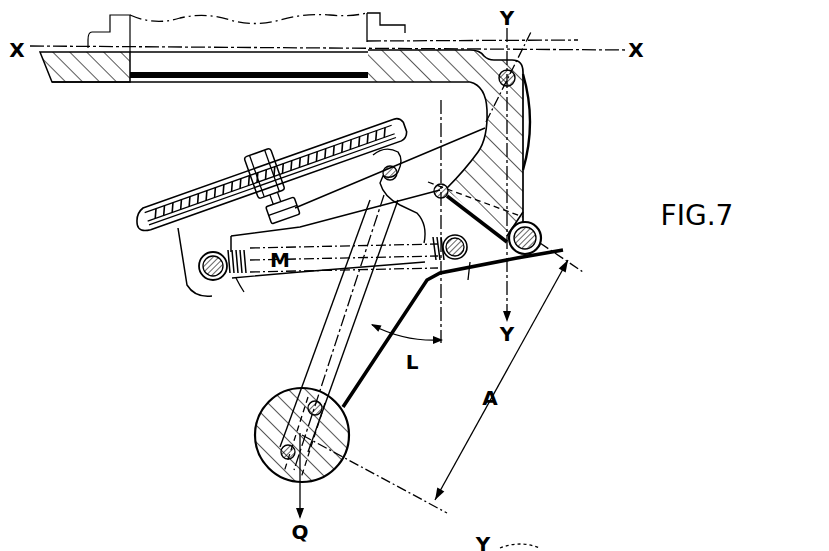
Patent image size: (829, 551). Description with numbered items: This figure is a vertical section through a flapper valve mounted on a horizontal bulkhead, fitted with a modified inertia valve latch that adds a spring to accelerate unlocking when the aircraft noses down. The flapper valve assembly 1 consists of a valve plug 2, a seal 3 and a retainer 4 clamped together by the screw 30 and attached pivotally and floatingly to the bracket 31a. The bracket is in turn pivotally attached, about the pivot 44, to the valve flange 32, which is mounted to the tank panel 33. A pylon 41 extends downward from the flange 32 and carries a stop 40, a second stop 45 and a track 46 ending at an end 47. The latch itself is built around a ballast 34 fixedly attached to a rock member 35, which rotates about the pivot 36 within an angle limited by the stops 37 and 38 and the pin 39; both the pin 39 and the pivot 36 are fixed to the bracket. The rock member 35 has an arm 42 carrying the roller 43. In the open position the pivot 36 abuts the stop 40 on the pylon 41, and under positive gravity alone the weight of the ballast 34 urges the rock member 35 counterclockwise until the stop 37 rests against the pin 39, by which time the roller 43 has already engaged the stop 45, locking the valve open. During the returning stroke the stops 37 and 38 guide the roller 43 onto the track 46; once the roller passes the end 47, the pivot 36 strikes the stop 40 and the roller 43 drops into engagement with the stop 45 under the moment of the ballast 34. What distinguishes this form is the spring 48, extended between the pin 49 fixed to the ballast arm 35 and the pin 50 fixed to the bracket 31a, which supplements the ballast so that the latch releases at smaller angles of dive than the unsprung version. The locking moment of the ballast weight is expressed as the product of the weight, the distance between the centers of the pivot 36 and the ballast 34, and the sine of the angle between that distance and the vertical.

The flapper valve assembly 1 is at (238, 173).
The valve plug 2 is at (178, 232).
The seal 3 is at (137, 220).
The retainer 4 is at (178, 200).
The screw 30 is at (270, 165).
The bracket 31a is at (302, 283).
The valve flange 32 is at (418, 57).
The tank panel 33 is at (530, 42).
The ballast 34 is at (263, 447).
The rock member 35 is at (340, 337).
The pivot 36 is at (525, 176).
The stop 37 is at (418, 155).
The stop 38 is at (368, 218).
The pin 39 is at (388, 166).
The stop 40 is at (443, 184).
The pylon 41 is at (513, 122).
The arm 42 is at (490, 262).
The roller 43 is at (545, 231).
The pivot 44 is at (518, 77).
The stop 45 is at (527, 217).
The track 46 is at (476, 264).
The end 47 is at (545, 262).
The spring 48 is at (237, 287).
The pin 49 is at (455, 260).
The pin 50 is at (205, 280).